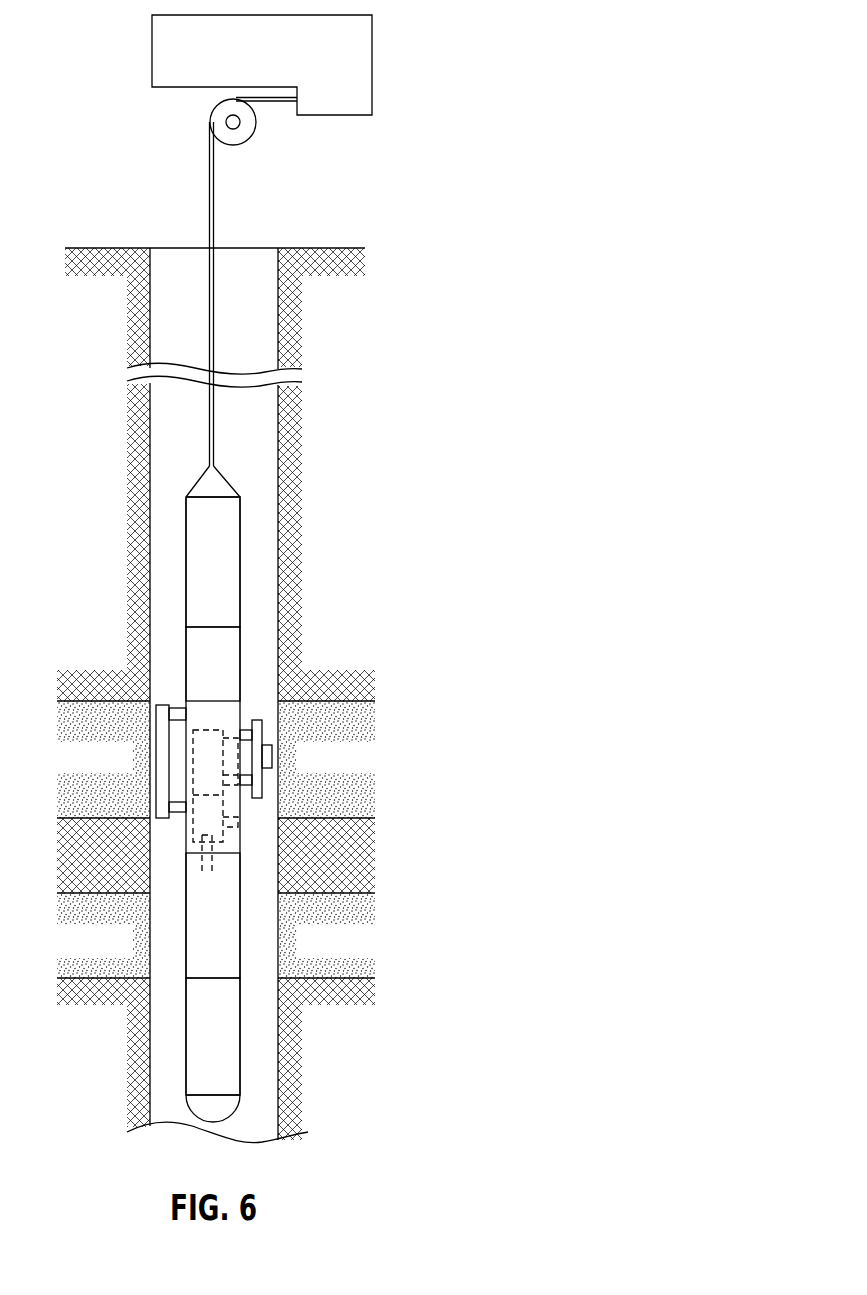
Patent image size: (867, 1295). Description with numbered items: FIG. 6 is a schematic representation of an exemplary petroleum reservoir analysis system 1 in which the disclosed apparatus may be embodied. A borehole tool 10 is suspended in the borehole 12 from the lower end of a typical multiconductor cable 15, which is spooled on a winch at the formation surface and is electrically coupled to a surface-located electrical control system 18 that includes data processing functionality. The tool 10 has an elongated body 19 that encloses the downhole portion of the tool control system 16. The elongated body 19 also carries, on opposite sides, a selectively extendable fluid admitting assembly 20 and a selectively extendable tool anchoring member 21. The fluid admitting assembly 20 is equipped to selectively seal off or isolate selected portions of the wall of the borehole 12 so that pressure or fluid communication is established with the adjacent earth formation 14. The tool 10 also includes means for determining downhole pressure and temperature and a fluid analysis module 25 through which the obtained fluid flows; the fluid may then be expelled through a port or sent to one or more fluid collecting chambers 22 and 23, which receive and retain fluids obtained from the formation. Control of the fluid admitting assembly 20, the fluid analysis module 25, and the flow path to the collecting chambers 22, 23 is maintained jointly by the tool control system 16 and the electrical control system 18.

The petroleum reservoir analysis system 1 is at (460, 51).
The electrical control system 18 is at (340, 115).
The multiconductor cable 15 is at (208, 182).
The borehole 12 is at (278, 314).
The earth formation 14 is at (315, 768).
The borehole tool 10 is at (241, 598).
The elongated body 19 is at (218, 535).
The tool control system 16 is at (200, 675).
The tool anchoring member 21 is at (163, 763).
The fluid admitting assembly 20 is at (257, 732).
The fluid analysis module 25 is at (226, 826).
The fluid collecting chamber 22 is at (200, 926).
The fluid collecting chamber 23 is at (200, 1046).